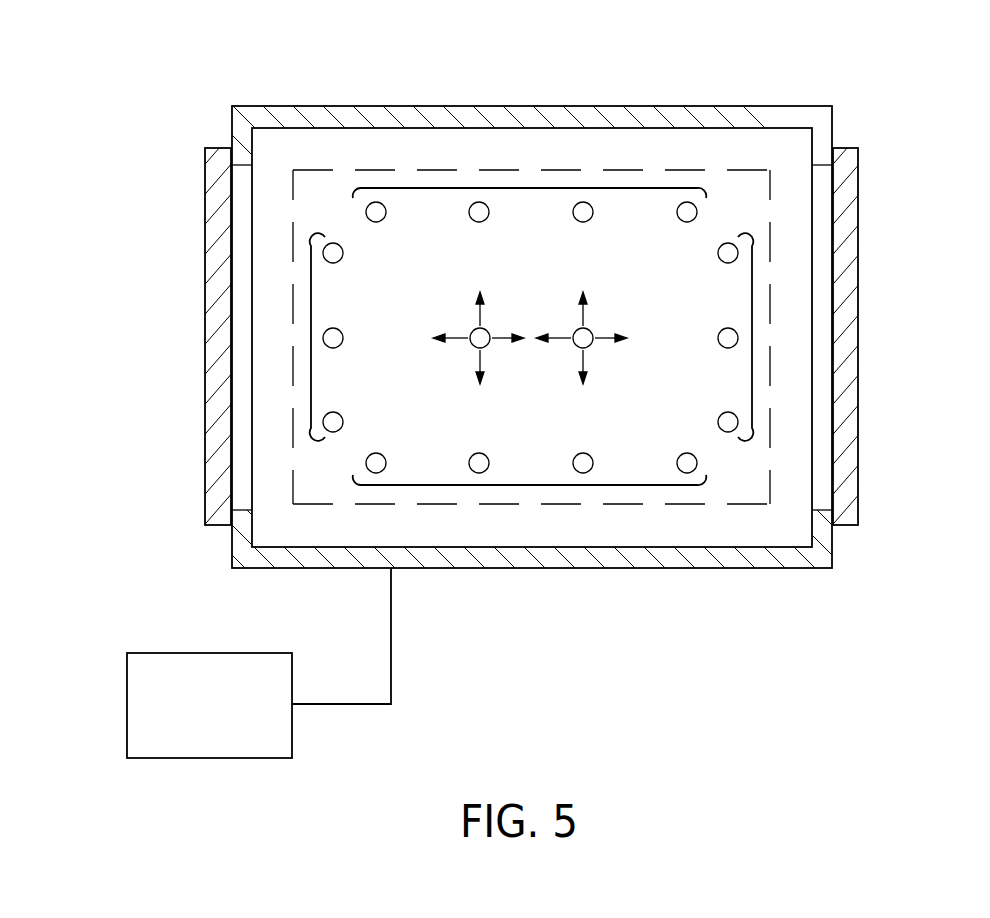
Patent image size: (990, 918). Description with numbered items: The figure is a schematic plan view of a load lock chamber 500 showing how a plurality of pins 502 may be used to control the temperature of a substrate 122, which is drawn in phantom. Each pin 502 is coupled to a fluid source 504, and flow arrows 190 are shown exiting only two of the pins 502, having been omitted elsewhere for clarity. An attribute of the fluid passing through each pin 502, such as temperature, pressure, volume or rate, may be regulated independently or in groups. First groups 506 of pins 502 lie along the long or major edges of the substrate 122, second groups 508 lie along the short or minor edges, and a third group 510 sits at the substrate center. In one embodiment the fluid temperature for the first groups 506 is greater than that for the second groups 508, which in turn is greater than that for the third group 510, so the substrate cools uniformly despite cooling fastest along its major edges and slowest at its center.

The load lock chamber 500 is at (815, 683).
The substrate 122 is at (677, 172).
The pins 502 is at (383, 200).
The flow arrows 190 is at (482, 358).
The third group of pins 510 is at (510, 298).
The first groups of pins 506 is at (531, 188).
The second groups of pins 508 is at (311, 342).
The fluid source 504 is at (210, 653).